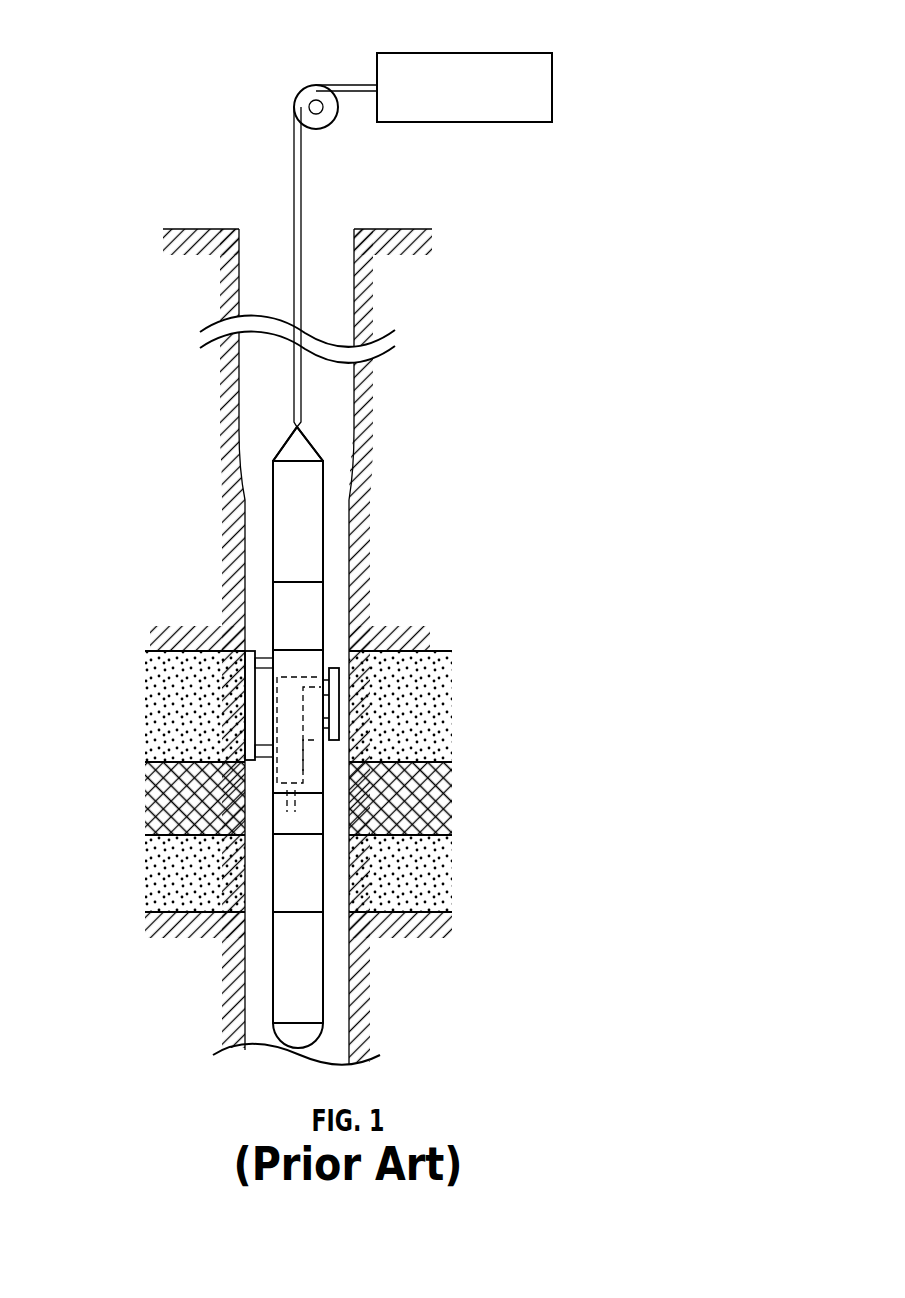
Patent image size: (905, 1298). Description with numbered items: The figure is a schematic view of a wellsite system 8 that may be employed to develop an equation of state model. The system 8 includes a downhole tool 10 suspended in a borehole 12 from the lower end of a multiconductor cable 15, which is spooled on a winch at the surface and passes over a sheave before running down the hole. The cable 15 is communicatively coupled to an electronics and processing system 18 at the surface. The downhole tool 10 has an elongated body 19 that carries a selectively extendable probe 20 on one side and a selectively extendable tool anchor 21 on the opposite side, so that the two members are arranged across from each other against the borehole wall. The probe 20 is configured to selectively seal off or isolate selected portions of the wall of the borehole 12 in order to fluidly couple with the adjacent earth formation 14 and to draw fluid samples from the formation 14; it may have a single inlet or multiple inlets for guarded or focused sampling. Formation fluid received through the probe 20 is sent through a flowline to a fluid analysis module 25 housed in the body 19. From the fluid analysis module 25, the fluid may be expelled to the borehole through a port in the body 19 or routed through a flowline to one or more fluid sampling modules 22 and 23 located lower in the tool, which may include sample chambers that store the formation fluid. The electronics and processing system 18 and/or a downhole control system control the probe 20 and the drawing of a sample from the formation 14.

The wellsite system 8 is at (112, 24).
The downhole tool 10 is at (290, 737).
The borehole 12 is at (358, 300).
The earth formation 14 is at (422, 708).
The multiconductor cable 15 is at (293, 188).
The electronics and processing system 18 is at (490, 53).
The elongated body 19 is at (308, 512).
The selectively extendable probe 20 is at (343, 678).
The selectively extendable tool anchor 21 is at (250, 678).
The fluid sampling module 22 is at (285, 905).
The fluid sampling module 23 is at (282, 993).
The fluid analysis module 25 is at (292, 755).